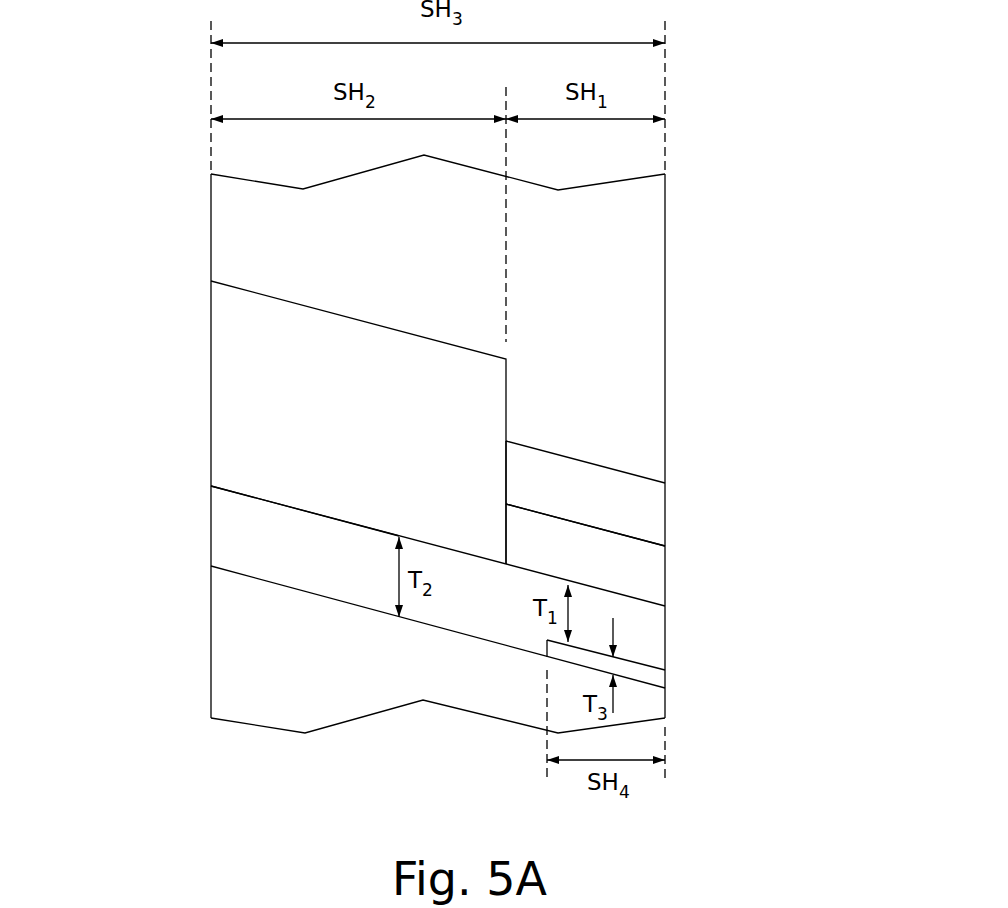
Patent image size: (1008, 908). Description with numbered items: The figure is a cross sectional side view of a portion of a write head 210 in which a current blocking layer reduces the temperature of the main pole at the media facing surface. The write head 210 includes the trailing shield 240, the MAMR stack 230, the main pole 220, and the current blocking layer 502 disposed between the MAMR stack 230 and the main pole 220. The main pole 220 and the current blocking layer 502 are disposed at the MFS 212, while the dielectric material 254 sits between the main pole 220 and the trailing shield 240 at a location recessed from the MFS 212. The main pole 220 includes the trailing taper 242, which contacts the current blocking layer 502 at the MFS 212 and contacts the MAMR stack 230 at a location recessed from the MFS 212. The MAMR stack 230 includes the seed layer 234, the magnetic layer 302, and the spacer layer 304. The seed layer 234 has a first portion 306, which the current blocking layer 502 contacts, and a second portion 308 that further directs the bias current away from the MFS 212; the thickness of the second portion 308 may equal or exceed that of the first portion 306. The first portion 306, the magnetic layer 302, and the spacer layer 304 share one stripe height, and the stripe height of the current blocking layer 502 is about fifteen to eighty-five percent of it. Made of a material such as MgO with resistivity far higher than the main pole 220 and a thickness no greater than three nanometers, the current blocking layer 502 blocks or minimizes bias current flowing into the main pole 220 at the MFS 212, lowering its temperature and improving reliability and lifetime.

The write head 210 is at (135, 58).
The MFS 212 is at (665, 223).
The main pole 220 is at (502, 684).
The MAMR stack 230 is at (788, 538).
The seed layer 234 is at (642, 603).
The trailing shield 240 is at (614, 301).
The trailing taper 242 is at (340, 600).
The dielectric material 254 is at (379, 432).
The magnetic layer 302 is at (652, 577).
The spacer layer 304 is at (650, 505).
The first portion 306 is at (650, 638).
The second portion 308 is at (283, 535).
The current blocking layer 502 is at (653, 678).